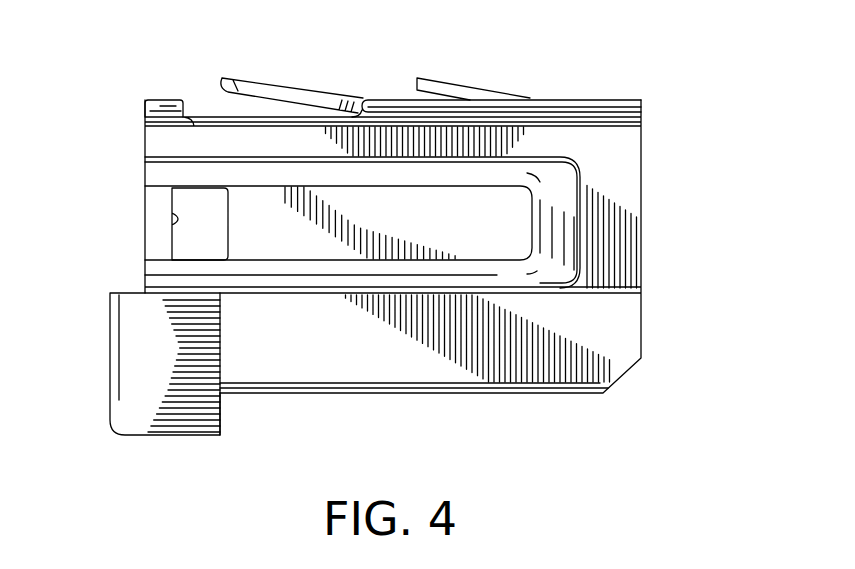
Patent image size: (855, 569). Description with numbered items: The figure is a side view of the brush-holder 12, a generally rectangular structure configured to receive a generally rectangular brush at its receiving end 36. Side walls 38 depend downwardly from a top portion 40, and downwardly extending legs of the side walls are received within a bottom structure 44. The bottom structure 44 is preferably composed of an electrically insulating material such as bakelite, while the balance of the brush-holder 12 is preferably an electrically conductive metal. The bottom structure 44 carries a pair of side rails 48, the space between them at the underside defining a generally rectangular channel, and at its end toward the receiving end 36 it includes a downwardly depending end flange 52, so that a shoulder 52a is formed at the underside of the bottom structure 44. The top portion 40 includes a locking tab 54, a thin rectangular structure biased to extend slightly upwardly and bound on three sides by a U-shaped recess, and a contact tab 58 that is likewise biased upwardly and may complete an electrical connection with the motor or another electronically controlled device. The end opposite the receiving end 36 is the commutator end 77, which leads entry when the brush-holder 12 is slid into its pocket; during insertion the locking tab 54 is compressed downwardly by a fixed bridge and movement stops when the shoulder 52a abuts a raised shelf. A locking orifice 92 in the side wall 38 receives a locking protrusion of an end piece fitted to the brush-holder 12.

The brush-holder 12 is at (622, 72).
The top portion 40 is at (165, 99).
The contact tab 58 is at (298, 88).
The locking tab 54 is at (462, 86).
The side walls 38 is at (625, 165).
The commutator end 77 is at (642, 222).
The locking orifice 92 is at (172, 226).
The receiving end 36 is at (147, 250).
The end flange 52 is at (166, 406).
The shoulder 52a is at (220, 412).
The side rails 48 is at (381, 350).
The bottom structure 44 is at (497, 398).